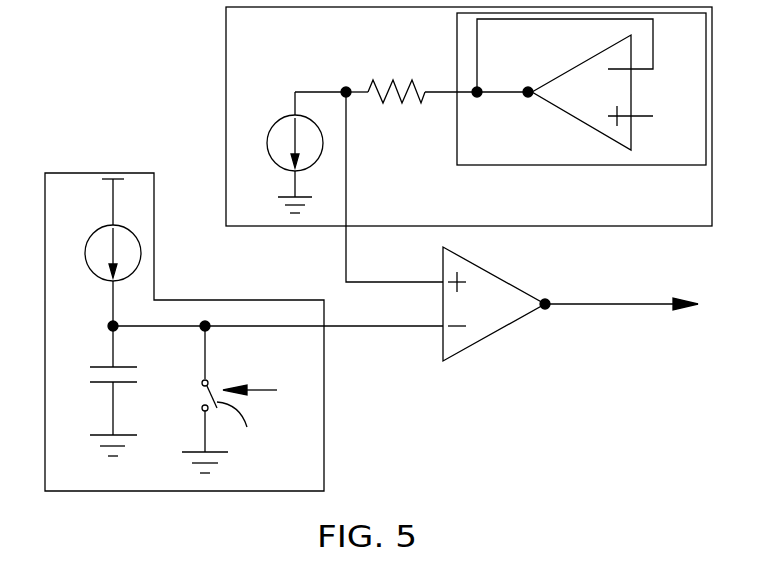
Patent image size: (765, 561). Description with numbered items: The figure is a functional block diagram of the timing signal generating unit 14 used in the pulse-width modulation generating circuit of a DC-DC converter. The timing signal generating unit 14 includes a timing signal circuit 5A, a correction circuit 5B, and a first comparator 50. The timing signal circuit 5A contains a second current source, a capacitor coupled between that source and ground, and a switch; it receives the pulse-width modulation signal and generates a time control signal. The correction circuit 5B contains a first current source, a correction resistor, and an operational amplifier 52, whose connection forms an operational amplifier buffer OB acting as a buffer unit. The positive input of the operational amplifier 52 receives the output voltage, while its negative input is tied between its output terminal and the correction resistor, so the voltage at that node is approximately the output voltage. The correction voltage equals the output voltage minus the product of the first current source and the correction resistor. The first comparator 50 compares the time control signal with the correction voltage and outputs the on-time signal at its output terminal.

The timing signal generating unit 14 is at (92, 160).
The timing signal circuit 5A is at (316, 484).
The correction circuit 5B is at (257, 40).
The operational amplifier buffer OB is at (490, 160).
The first comparator 50 is at (498, 314).
The operational amplifier 52 is at (598, 102).